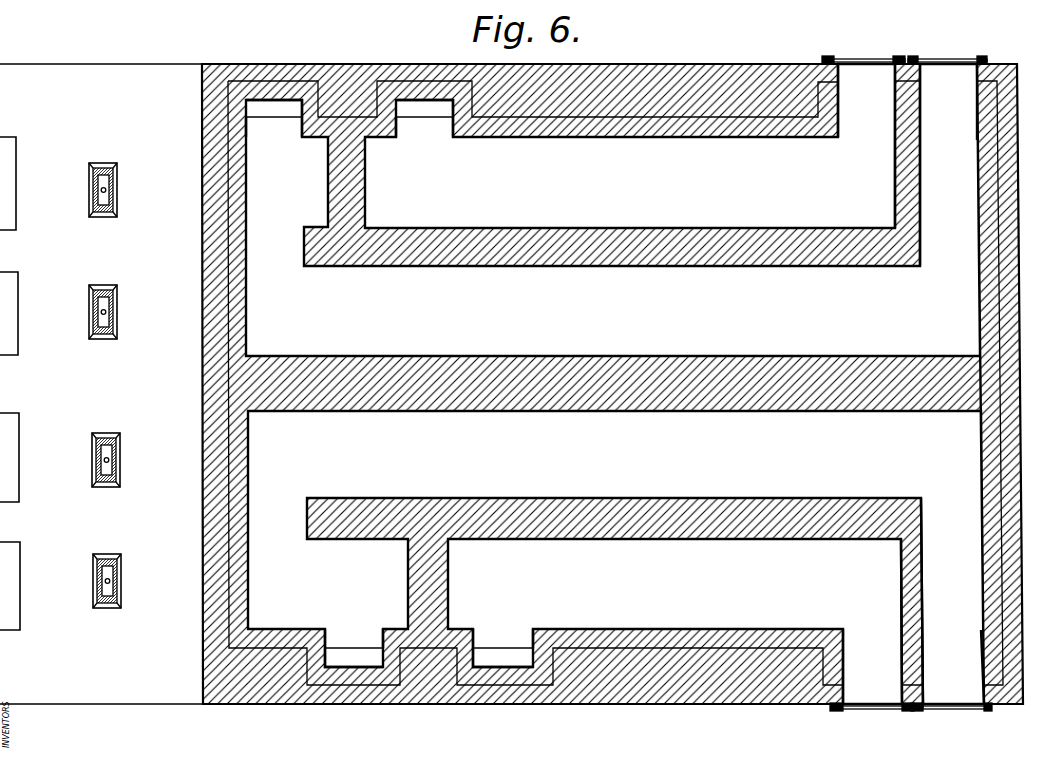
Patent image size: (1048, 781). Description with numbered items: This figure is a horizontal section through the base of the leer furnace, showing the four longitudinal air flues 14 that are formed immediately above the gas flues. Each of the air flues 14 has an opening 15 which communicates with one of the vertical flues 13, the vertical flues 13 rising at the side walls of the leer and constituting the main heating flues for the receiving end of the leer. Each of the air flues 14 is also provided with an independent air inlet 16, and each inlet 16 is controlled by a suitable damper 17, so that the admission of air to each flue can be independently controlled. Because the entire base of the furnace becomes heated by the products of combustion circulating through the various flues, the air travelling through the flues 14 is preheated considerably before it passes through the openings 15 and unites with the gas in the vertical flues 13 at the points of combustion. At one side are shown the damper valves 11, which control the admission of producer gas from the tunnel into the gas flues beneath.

The damper valve 11 is at (103, 584).
The vertical flue 13 is at (389, 384).
The longitudinal flue 14 is at (615, 384).
The opening 15 is at (389, 382).
The air inlet 16 is at (911, 384).
The damper 17 is at (960, 710).